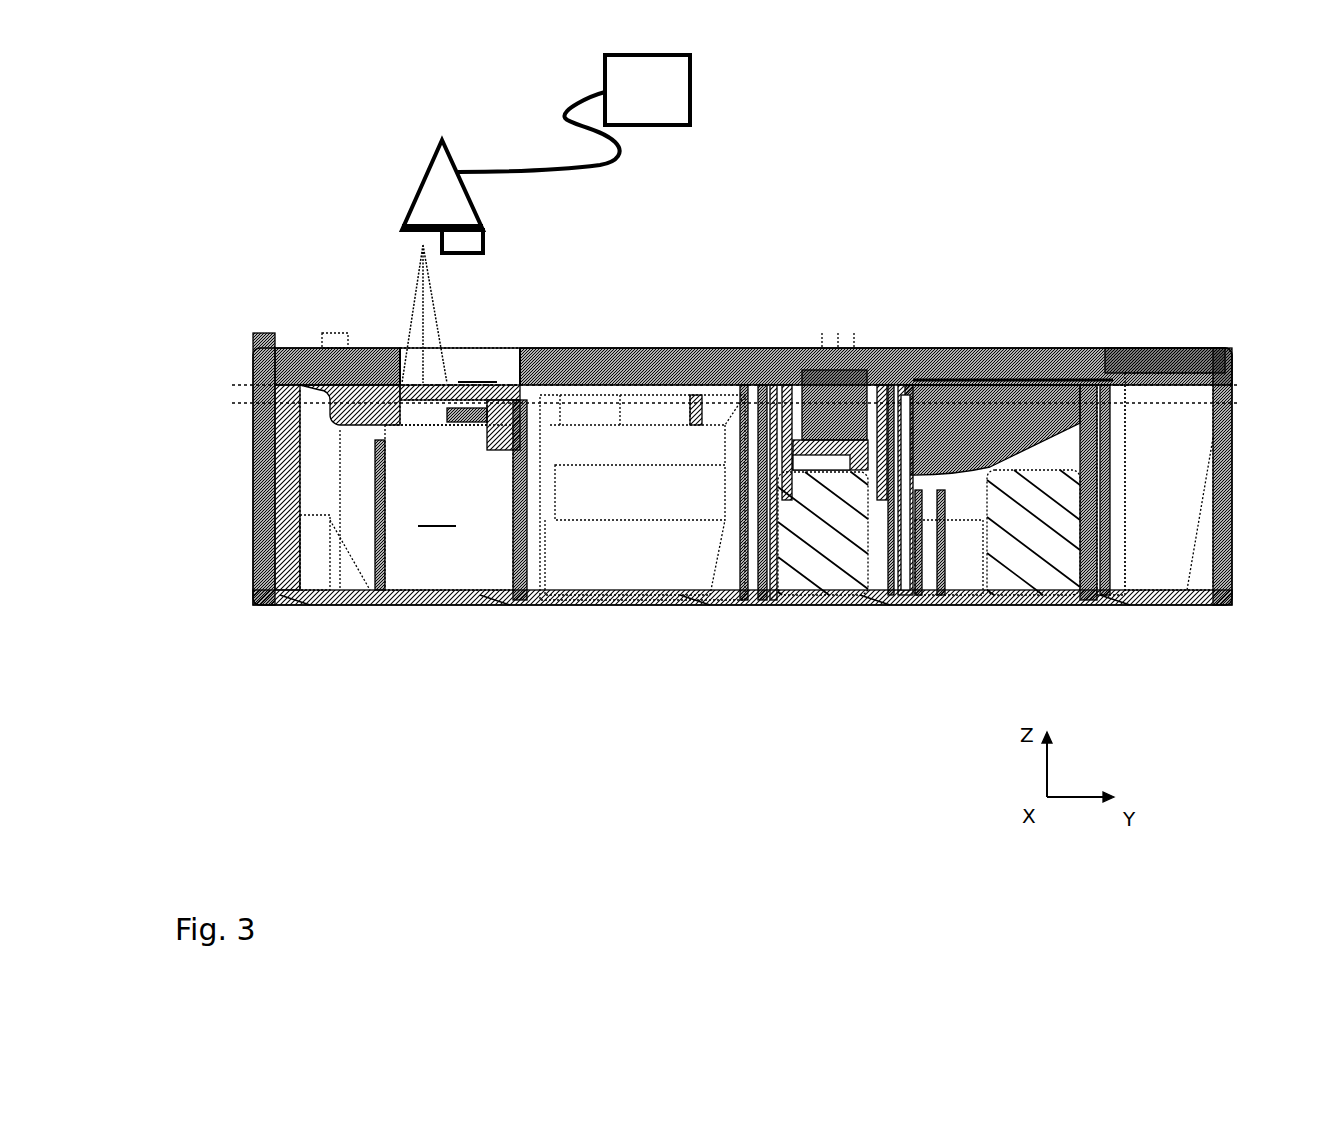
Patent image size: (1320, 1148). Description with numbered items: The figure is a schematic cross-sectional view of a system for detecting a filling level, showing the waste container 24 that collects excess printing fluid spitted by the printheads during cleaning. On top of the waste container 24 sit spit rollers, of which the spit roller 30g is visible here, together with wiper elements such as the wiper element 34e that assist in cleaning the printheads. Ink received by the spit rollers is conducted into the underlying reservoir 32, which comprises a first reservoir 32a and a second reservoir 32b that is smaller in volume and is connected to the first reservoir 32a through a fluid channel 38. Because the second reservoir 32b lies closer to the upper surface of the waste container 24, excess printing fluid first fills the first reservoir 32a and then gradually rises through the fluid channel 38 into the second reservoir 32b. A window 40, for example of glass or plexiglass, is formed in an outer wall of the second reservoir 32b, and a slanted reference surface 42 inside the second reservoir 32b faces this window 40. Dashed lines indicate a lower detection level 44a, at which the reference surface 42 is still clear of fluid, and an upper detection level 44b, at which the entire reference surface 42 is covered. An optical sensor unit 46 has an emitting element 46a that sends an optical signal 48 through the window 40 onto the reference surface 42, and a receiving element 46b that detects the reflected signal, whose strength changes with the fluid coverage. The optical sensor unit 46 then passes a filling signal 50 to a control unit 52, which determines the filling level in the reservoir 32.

The waste container 24 is at (418, 598).
The spit roller 30g is at (995, 368).
The reservoir 32 is at (418, 481).
The first reservoir 32a is at (449, 507).
The second reservoir 32b is at (460, 366).
The wiper element 34e is at (839, 332).
The fluid channel 38 is at (502, 430).
The window 40 is at (474, 340).
The slanted reference surface 42 is at (438, 395).
The lower detection level 44a is at (232, 405).
The upper detection level 44b is at (230, 382).
The optical sensor unit 46 is at (453, 208).
The emitting element 46a is at (410, 236).
The receiving element 46b is at (486, 236).
The optical signal 48 is at (392, 320).
The filling signal 50 is at (520, 163).
The control unit 52 is at (690, 85).